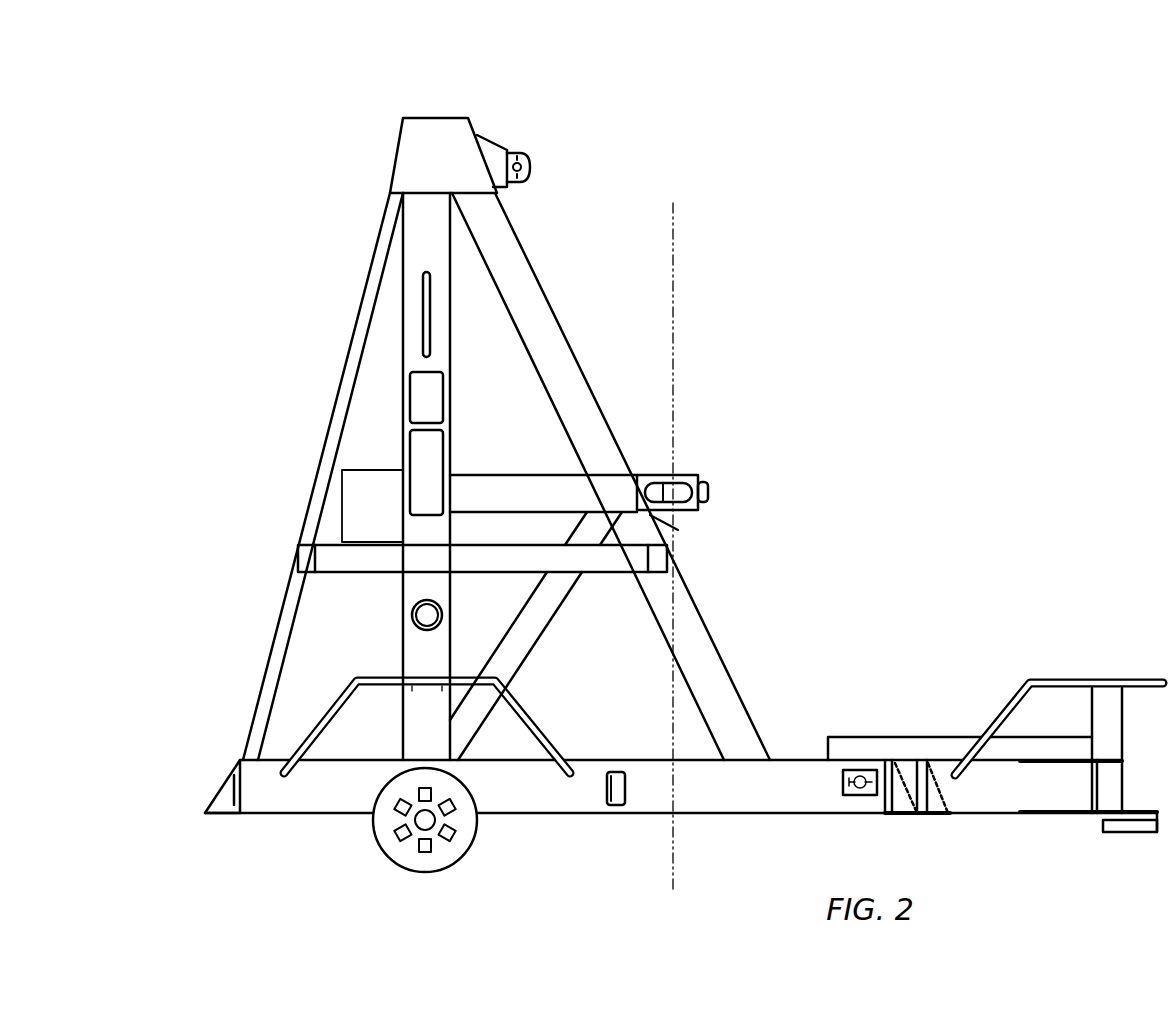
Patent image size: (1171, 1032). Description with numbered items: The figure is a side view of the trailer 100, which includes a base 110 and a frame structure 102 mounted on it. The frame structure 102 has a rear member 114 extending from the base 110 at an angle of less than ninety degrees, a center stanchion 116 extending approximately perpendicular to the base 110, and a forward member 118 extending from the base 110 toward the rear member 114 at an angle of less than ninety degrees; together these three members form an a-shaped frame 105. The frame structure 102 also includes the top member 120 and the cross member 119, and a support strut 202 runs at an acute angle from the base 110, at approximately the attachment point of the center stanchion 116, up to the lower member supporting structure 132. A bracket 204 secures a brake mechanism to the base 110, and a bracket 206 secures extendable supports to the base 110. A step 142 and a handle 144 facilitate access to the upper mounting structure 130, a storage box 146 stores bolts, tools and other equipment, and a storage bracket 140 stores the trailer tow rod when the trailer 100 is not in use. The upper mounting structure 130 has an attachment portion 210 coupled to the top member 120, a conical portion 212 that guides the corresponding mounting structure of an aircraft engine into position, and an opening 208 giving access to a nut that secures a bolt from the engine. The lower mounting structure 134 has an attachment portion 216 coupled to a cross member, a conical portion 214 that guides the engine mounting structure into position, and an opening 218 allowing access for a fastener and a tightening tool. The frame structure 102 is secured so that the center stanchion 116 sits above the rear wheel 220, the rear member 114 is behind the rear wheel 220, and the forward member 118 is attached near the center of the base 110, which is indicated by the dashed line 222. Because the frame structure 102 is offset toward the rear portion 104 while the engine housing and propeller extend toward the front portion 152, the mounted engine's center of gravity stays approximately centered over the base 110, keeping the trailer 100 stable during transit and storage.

The trailer 100 is at (1047, 73).
The frame structure 102 is at (646, 78).
The rear portion 104 is at (240, 835).
The a-shaped frame 105 is at (450, 98).
The base 110 is at (822, 815).
The rear member 114 is at (350, 340).
The center stanchion 116 is at (423, 250).
The forward member 118 is at (555, 332).
The cross member 119 is at (372, 572).
The top member 120 is at (432, 118).
The upper mounting structure 130 is at (540, 150).
The lower member supporting structure 132 is at (455, 473).
The lower mounting structure 134 is at (718, 455).
The storage bracket 140 is at (865, 737).
The step 142 is at (372, 677).
The handle 144 is at (432, 350).
The storage box 146 is at (353, 519).
The front portion 152 is at (1075, 840).
The support strut 202 is at (552, 628).
The bracket 204 is at (613, 771).
The bracket 206 is at (917, 823).
The opening 208 is at (533, 165).
The attachment portion 210 is at (505, 152).
The conical portion 212 is at (530, 160).
The conical portion 214 is at (710, 492).
The attachment portion 216 is at (688, 475).
The opening 218 is at (670, 480).
The rear wheel 220 is at (427, 872).
The dashed line 222 is at (676, 858).